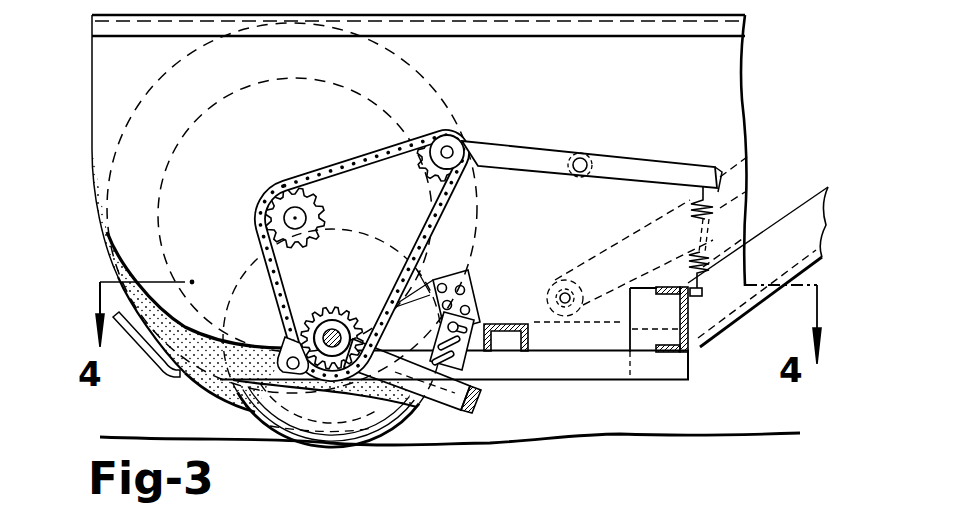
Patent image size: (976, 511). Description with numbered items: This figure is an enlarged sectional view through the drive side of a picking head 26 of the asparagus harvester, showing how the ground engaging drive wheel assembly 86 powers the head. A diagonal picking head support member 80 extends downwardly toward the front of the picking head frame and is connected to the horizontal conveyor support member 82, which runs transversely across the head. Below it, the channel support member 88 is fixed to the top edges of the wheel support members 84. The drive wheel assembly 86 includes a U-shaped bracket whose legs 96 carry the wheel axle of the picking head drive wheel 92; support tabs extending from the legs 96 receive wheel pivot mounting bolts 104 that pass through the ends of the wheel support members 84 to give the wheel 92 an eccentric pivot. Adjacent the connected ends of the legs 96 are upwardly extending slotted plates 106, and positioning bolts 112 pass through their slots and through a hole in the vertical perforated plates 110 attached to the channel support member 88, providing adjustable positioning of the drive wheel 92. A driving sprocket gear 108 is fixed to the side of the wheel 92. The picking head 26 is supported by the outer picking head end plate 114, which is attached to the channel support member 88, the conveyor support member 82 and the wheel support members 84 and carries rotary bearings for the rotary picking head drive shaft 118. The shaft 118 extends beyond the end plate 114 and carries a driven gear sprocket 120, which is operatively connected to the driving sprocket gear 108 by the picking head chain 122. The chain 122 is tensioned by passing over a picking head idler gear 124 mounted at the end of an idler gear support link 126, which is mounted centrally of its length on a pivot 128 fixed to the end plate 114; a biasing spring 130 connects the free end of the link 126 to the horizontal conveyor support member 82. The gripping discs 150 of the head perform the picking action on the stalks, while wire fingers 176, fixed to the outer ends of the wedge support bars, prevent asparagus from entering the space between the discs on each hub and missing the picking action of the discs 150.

The picking head 26 is at (67, 262).
The diagonal picking head support member 80 is at (792, 220).
The horizontal conveyor support member 82 is at (694, 349).
The wheel support member 84 is at (580, 369).
The ground engaging drive wheel assembly 86 is at (526, 446).
The channel support member 88 is at (505, 323).
The picking head drive wheel 92 is at (251, 414).
The leg 96 is at (441, 399).
The wheel pivot mounting bolt 104 is at (266, 354).
The slotted plate 106 is at (482, 359).
The driving sprocket gear 108 is at (333, 307).
The vertical perforated plate 110 is at (471, 272).
The positioning bolt 112 is at (478, 291).
The outer picking head end plate 114 is at (502, 96).
The rotary picking head drive shaft 118 is at (293, 207).
The driven gear sprocket 120 is at (322, 212).
The picking head chain 122 is at (441, 217).
The picking head idler gear 124 is at (434, 128).
The idler gear support link 126 is at (684, 163).
The pivot 128 is at (584, 159).
The biasing spring 130 is at (676, 212).
The gripping disc 150 is at (109, 252).
The wire finger 176 is at (156, 369).